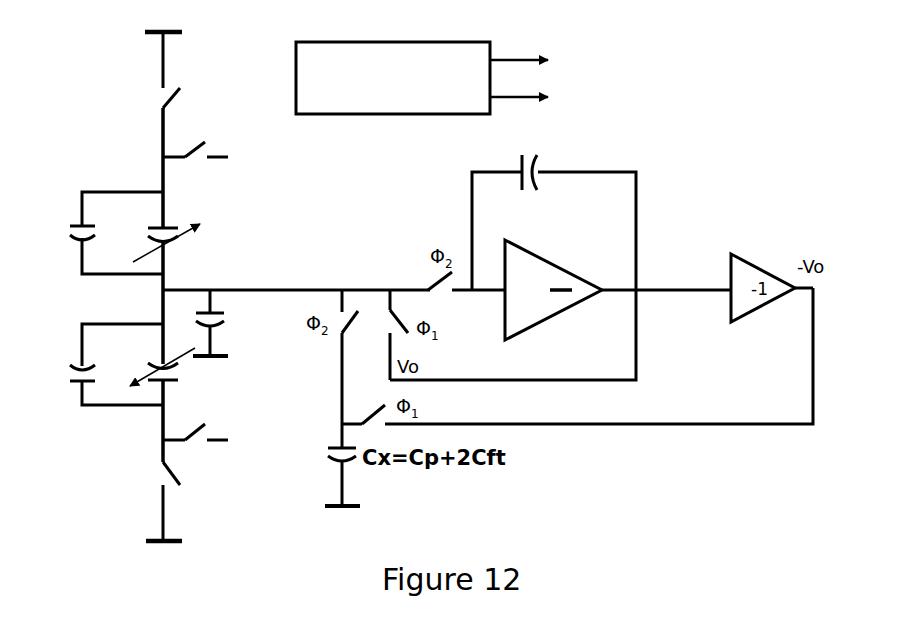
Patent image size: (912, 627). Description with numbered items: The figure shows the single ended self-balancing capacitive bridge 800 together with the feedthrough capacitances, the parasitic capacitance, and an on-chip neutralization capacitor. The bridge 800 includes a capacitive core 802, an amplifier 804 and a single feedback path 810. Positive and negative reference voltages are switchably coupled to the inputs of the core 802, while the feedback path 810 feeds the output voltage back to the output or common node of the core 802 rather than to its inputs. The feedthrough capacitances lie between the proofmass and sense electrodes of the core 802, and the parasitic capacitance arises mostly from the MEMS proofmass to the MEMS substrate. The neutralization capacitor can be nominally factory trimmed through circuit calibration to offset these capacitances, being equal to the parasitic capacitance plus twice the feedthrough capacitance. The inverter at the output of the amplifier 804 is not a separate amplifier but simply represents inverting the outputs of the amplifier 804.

The single ended self-balancing capacitive bridge 800 is at (590, 68).
The capacitive core 802 is at (78, 311).
The amplifier 804 is at (692, 199).
The single feedback path 810 is at (620, 424).